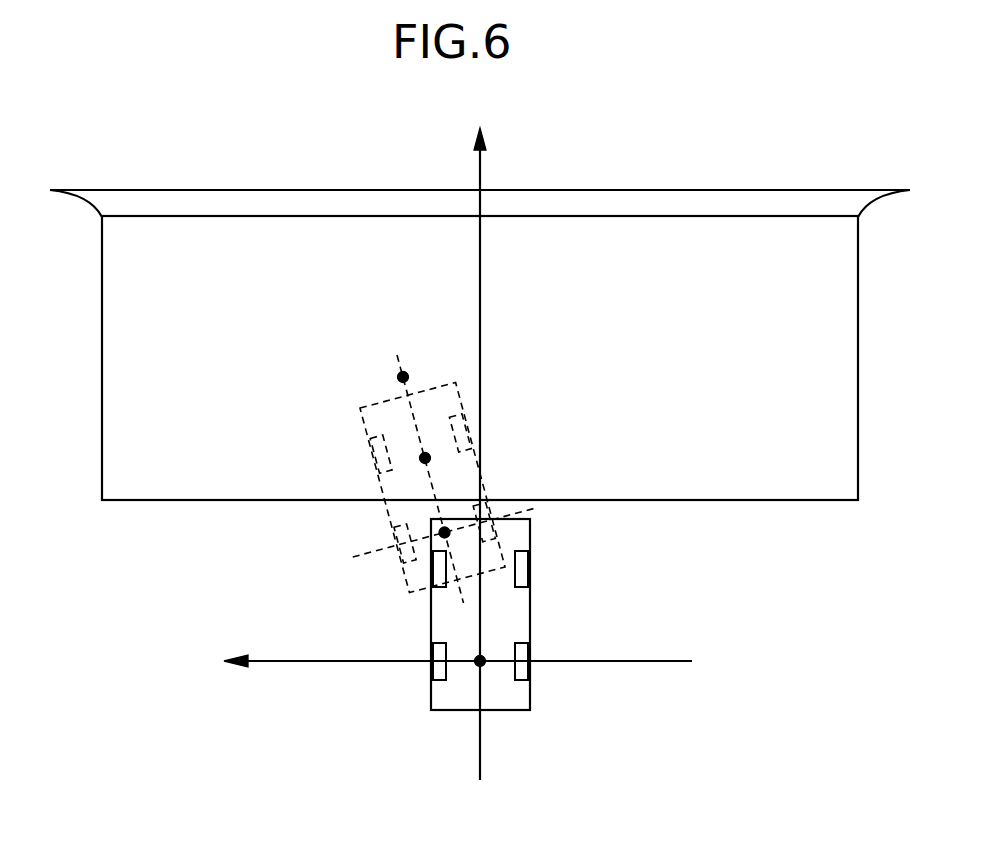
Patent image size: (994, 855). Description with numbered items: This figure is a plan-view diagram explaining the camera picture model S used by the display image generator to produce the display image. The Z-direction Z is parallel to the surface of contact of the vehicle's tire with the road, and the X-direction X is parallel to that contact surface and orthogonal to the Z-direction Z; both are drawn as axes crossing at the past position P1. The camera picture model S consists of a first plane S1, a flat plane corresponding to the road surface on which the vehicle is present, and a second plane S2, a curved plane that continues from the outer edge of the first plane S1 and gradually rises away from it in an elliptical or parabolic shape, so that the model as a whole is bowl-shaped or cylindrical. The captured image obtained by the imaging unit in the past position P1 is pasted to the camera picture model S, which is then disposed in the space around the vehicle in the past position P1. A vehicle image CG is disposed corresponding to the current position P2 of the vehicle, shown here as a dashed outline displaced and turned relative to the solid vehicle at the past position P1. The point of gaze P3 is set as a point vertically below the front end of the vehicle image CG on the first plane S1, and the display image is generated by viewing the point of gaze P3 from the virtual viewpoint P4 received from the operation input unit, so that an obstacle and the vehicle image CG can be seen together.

The camera picture model S is at (82, 322).
The first plane S1 is at (122, 370).
The second plane S2 is at (102, 205).
The Z-direction Z is at (483, 160).
The X-direction X is at (300, 664).
The past position P1 is at (480, 658).
The current position P2 is at (440, 532).
The point of gaze P3 is at (400, 377).
The virtual viewpoint P4 is at (420, 458).
The vehicle image CG is at (412, 579).